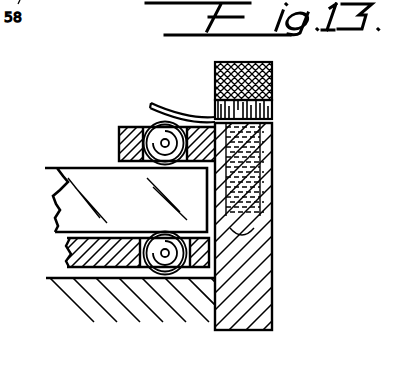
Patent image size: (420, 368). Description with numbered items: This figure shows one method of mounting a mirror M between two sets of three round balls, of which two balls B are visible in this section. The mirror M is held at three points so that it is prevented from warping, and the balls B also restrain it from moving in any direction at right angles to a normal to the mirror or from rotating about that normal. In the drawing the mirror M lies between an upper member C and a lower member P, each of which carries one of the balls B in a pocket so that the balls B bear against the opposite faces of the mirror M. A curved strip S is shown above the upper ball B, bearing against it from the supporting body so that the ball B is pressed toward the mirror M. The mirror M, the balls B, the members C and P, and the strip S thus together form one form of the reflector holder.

The round ball B is at (150, 127).
The spring S is at (153, 105).
The carrier block C is at (118, 139).
The mirror M is at (126, 200).
The support block P is at (67, 250).